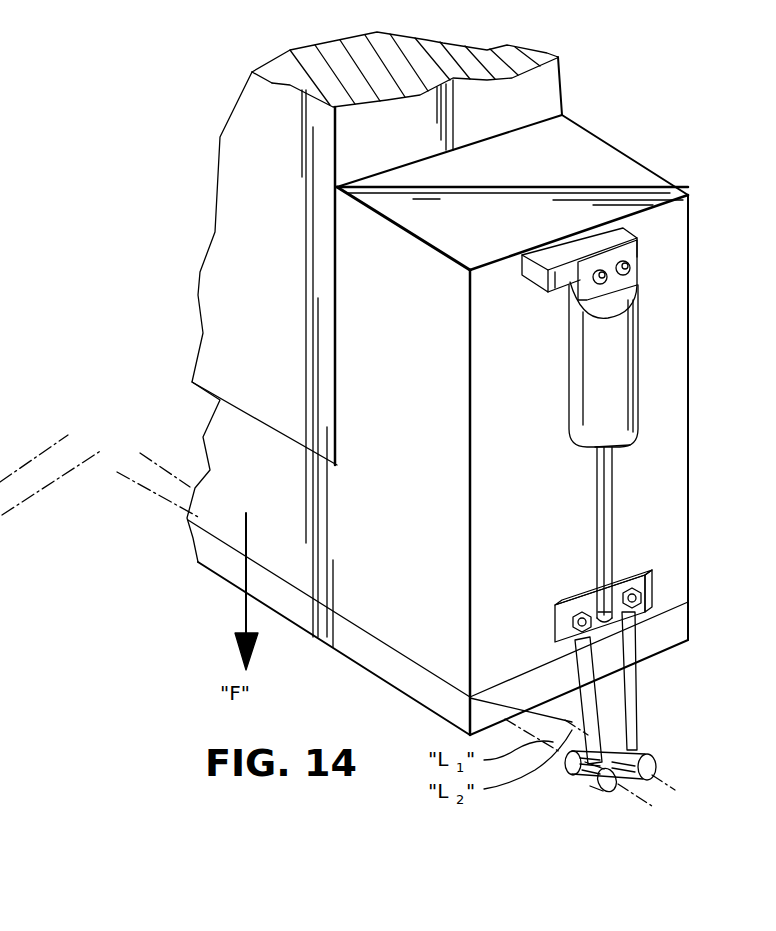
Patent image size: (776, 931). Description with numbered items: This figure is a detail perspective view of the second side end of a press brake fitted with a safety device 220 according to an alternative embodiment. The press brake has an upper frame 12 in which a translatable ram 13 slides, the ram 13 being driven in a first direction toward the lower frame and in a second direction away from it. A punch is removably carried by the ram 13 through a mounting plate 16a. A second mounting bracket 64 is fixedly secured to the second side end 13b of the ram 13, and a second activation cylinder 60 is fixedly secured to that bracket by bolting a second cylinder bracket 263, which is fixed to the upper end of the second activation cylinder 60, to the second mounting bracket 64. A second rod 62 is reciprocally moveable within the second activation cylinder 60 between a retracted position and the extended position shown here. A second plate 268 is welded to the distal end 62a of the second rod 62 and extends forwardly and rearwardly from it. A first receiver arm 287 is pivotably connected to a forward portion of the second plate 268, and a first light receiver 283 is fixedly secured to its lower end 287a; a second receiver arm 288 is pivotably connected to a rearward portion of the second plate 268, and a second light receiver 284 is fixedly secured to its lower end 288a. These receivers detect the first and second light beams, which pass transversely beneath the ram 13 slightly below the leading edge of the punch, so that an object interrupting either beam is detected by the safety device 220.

The upper frame 12 is at (242, 145).
The ram 13 is at (603, 170).
The second side end of the ram 13b is at (663, 253).
The mounting plate 16a is at (672, 625).
The second mounting bracket 64 is at (572, 245).
The second cylinder bracket 263 is at (618, 285).
The second activation cylinder 60 is at (627, 357).
The second rod 62 is at (608, 475).
The distal end of the second rod 62a is at (607, 620).
The second plate 268 is at (590, 597).
The safety device 220 is at (560, 696).
The first receiver arm 287 is at (580, 667).
The second receiver arm 288 is at (636, 697).
The second light receiver 284 is at (648, 745).
The lower end of the second receiver arm 288a is at (660, 768).
The lower end of the first receiver arm 287a is at (588, 781).
The first light receiver 283 is at (600, 788).